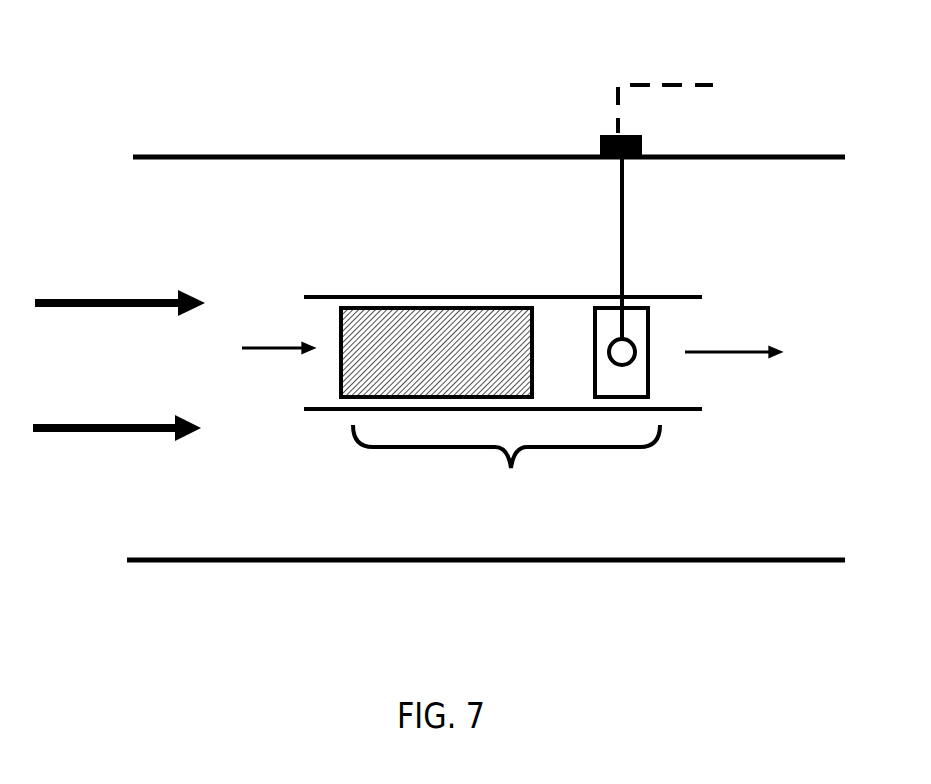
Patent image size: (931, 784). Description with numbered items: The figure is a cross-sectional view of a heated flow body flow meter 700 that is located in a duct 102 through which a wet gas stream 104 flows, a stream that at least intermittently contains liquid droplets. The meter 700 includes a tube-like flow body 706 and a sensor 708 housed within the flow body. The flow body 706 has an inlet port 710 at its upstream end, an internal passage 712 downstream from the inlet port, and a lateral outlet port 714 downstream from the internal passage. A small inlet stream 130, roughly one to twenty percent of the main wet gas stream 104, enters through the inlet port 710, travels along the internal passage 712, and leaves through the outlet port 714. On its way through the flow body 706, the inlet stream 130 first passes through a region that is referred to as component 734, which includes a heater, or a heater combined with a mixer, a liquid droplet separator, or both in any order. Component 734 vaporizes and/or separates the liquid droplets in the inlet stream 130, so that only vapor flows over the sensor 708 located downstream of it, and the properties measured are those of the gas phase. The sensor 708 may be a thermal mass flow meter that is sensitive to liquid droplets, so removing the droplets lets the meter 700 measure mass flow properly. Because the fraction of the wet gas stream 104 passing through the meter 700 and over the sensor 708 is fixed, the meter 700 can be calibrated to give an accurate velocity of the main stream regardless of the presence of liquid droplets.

The duct 102 is at (223, 157).
The wet gas stream 104 is at (98, 303).
The inlet stream 130 is at (273, 348).
The heated flow body flow meter 700 is at (308, 504).
The flow body 706 is at (327, 296).
The sensor 708 is at (633, 323).
The inlet port 710 is at (285, 306).
The internal passage 712 is at (506, 472).
The lateral outlet port 714 is at (709, 390).
The component 734 is at (428, 347).